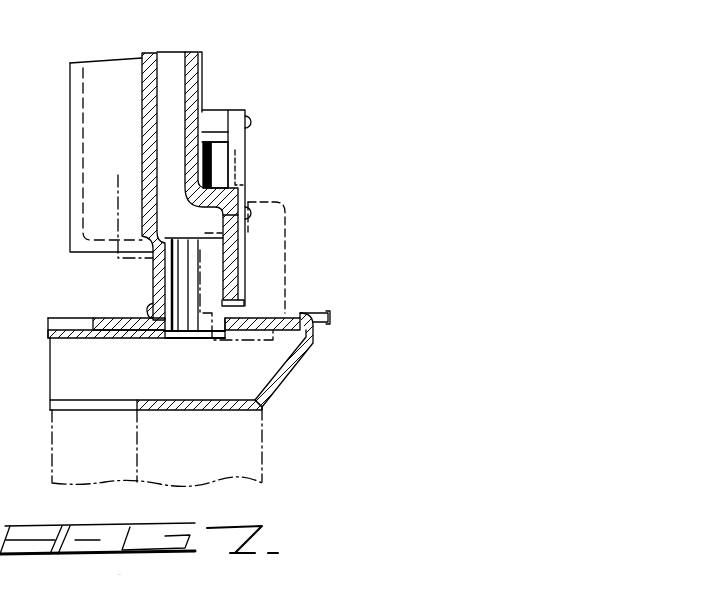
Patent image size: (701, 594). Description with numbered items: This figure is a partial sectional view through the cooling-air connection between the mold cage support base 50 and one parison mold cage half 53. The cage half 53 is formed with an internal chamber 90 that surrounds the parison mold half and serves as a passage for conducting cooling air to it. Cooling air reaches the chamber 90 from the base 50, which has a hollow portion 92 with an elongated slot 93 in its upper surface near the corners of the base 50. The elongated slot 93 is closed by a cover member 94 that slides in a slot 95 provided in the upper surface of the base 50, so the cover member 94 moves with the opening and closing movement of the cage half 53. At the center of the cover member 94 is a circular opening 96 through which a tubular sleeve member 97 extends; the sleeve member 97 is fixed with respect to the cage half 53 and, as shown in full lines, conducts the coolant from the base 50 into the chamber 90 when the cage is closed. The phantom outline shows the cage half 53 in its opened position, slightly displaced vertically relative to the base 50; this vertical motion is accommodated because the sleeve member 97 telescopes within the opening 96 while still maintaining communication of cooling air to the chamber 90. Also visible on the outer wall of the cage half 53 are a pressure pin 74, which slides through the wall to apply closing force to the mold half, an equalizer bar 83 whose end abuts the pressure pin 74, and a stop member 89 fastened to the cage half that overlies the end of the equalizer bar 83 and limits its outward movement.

The mold cage support base 50 is at (305, 360).
The second mold cage half 53 is at (228, 250).
The pressure pin 74 is at (212, 145).
The equalizer bar 83 is at (230, 157).
The stop member 89 is at (233, 117).
The internal chamber 90 is at (170, 67).
The hollow portion 92 is at (247, 385).
The elongated slot 93 is at (273, 331).
The cover member 94 is at (265, 314).
The slot 95 is at (308, 313).
The circular opening 96 is at (155, 312).
The tubular sleeve member 97 is at (228, 277).